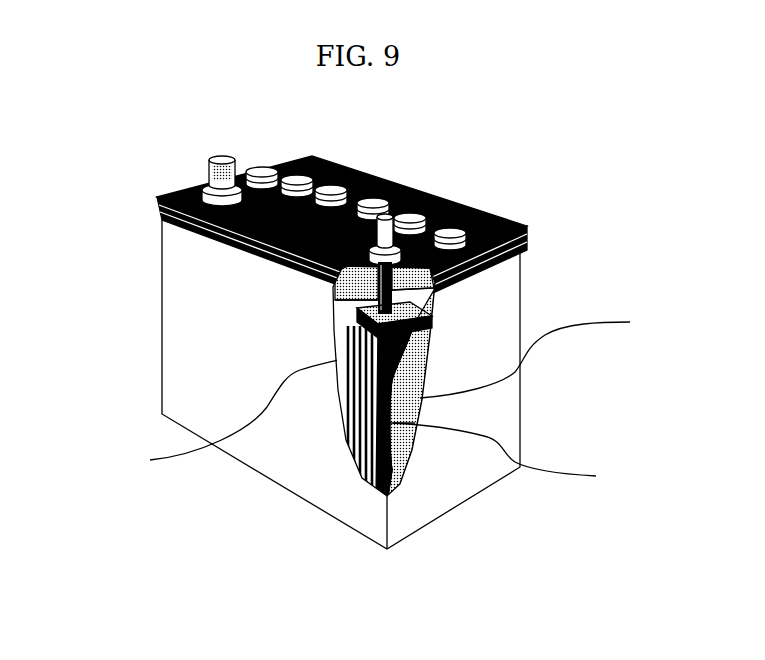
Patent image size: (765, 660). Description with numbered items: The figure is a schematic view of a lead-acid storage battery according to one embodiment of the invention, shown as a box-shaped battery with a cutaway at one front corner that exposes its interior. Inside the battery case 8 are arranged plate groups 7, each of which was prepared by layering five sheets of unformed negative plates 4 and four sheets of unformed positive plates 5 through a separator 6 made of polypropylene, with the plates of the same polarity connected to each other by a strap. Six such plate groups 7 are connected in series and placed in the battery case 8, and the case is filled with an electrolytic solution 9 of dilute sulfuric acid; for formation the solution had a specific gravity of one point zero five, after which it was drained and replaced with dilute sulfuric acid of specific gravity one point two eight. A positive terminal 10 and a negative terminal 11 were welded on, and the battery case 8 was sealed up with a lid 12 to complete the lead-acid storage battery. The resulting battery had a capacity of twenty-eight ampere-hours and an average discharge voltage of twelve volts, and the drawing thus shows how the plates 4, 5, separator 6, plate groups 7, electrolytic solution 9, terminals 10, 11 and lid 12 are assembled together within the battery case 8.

The negative plate 4 is at (393, 423).
The positive plate 5 is at (337, 360).
The separator 6 is at (345, 407).
The plate group 7 is at (365, 497).
The battery case 8 is at (240, 341).
The electrolytic solution 9 is at (420, 398).
The positive terminal 10 is at (245, 242).
The negative terminal 11 is at (207, 158).
The lid 12 is at (340, 165).